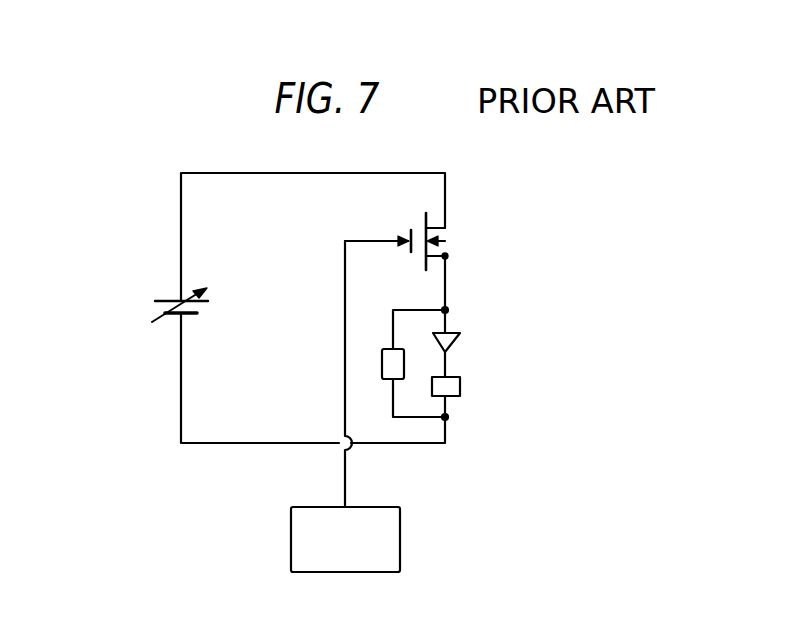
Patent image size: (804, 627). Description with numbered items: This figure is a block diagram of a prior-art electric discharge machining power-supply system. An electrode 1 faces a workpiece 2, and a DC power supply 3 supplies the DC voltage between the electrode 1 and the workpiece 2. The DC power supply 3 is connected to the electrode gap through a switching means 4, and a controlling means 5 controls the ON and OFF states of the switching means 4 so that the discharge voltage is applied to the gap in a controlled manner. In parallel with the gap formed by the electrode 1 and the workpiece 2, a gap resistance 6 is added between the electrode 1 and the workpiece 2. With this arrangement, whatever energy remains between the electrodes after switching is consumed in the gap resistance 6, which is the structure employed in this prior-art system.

The electrode 1 is at (455, 340).
The workpiece 2 is at (462, 385).
The DC power supply 3 is at (168, 301).
The switching means 4 is at (419, 222).
The controlling means 5 is at (401, 540).
The gap resistance 6 is at (386, 350).